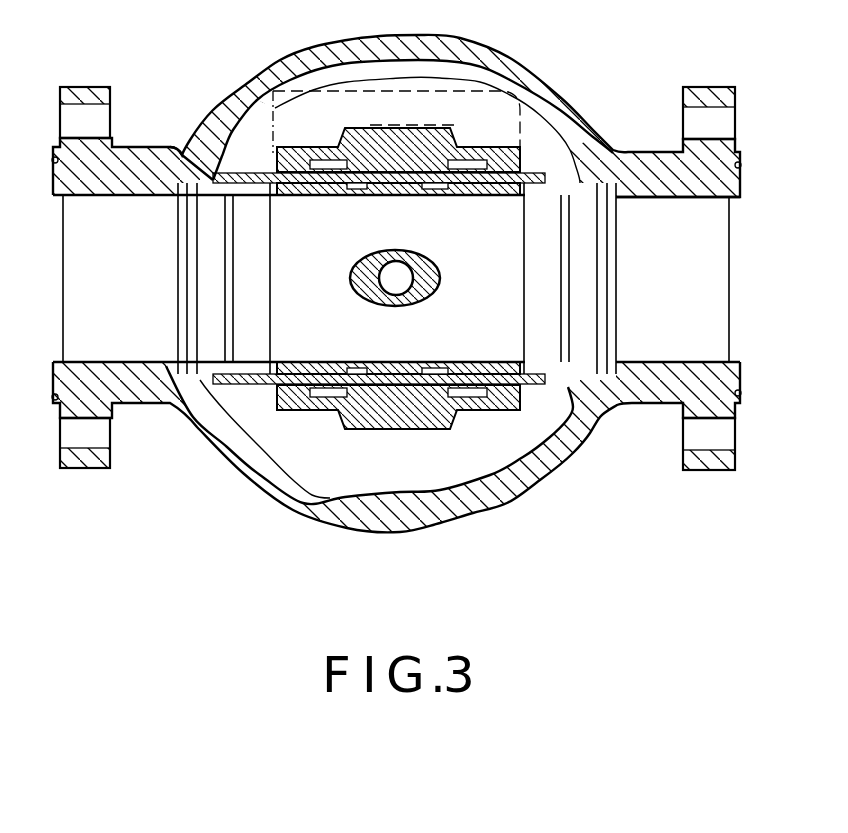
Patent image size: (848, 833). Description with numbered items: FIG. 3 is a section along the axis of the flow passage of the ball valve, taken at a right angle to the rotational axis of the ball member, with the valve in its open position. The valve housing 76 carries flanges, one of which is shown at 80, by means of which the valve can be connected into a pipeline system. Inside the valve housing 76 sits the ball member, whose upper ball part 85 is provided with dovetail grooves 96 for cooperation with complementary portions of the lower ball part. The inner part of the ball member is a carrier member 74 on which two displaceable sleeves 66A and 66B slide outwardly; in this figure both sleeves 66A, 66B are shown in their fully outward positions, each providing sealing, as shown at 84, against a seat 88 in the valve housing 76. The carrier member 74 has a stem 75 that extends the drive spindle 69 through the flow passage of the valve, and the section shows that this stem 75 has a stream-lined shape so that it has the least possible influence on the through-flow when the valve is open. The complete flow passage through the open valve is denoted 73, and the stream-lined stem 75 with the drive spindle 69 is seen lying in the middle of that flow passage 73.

The flange 80 is at (735, 87).
The sealing 84 is at (198, 163).
The upper ball part 85 is at (287, 113).
The dovetail grooves 96 is at (328, 130).
The displaceable sleeve 66B is at (582, 148).
The seat 88 is at (185, 197).
The stem 75 is at (368, 258).
The drive spindle 69 is at (400, 272).
The displaceable sleeve 66A is at (257, 402).
The flow passage 73 is at (395, 350).
The carrier member 74 is at (480, 357).
The valve housing 76 is at (205, 432).